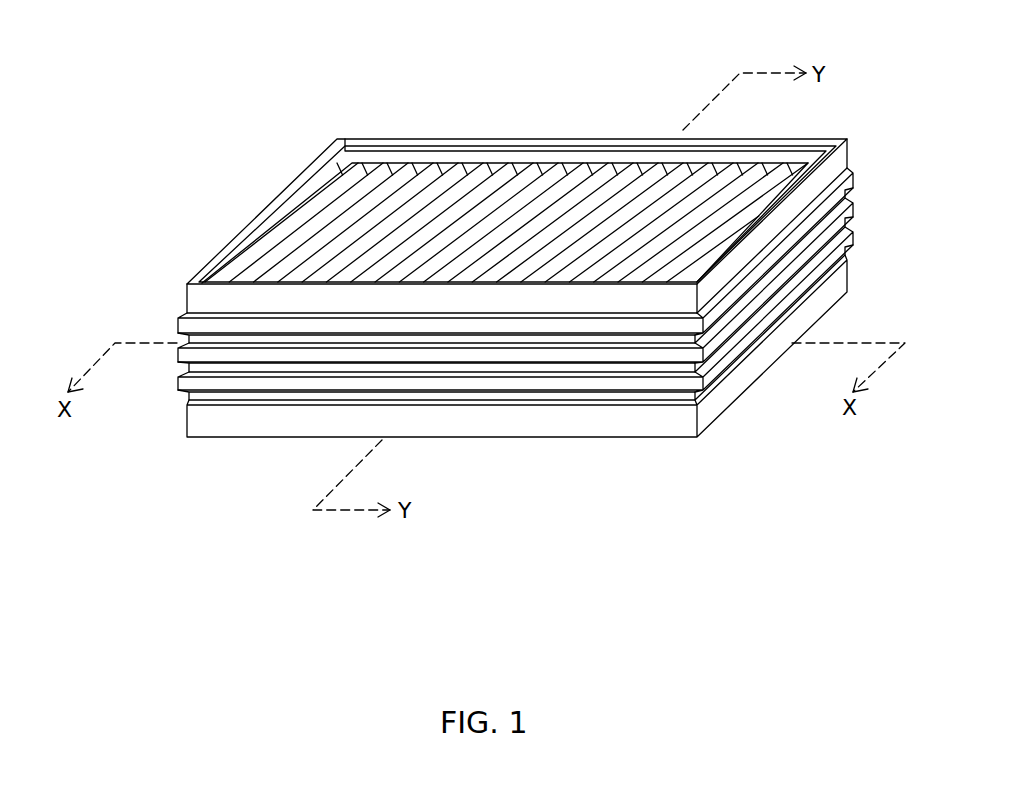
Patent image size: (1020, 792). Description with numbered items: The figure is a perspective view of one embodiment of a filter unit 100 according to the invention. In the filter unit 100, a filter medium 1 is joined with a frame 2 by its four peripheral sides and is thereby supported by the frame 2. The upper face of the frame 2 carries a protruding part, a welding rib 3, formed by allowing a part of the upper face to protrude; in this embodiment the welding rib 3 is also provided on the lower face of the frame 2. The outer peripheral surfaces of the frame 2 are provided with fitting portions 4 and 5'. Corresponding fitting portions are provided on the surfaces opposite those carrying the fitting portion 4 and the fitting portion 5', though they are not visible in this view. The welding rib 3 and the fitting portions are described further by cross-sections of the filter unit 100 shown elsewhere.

The filter unit 100 is at (388, 102).
The filter medium 1 is at (453, 192).
The frame 2 is at (713, 405).
The protruding part (welding rib) 3 is at (841, 138).
The fitting portion 4 is at (812, 253).
The fitting portion 5' is at (515, 329).